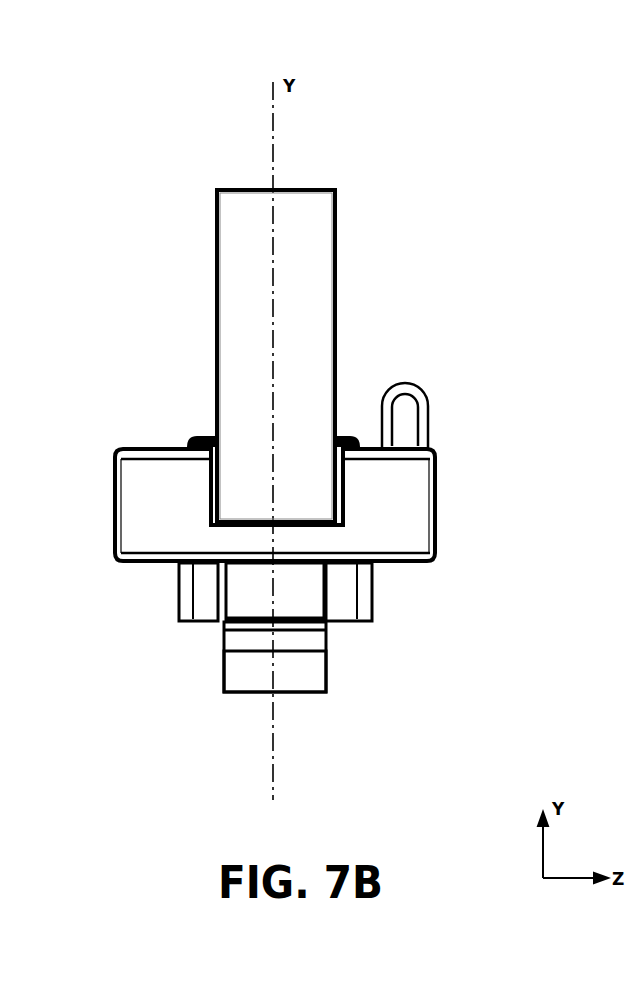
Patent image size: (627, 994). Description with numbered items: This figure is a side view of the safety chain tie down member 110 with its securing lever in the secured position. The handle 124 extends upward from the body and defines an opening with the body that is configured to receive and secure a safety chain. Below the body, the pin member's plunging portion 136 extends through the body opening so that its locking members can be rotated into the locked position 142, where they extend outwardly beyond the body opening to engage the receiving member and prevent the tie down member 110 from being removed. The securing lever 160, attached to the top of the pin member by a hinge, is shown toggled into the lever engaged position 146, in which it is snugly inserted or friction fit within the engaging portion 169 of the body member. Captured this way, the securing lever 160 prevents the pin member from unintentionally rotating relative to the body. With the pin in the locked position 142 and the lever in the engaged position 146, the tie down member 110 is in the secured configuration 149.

The safety chain tie down member 110 is at (506, 112).
The handle 124 is at (333, 282).
The plunging portion 136 is at (221, 672).
The locked position 142 is at (328, 668).
The lever engaged position 146 is at (414, 428).
The secured configuration 149 is at (431, 408).
The securing lever 160 is at (437, 366).
The engaging portion 169 is at (430, 475).